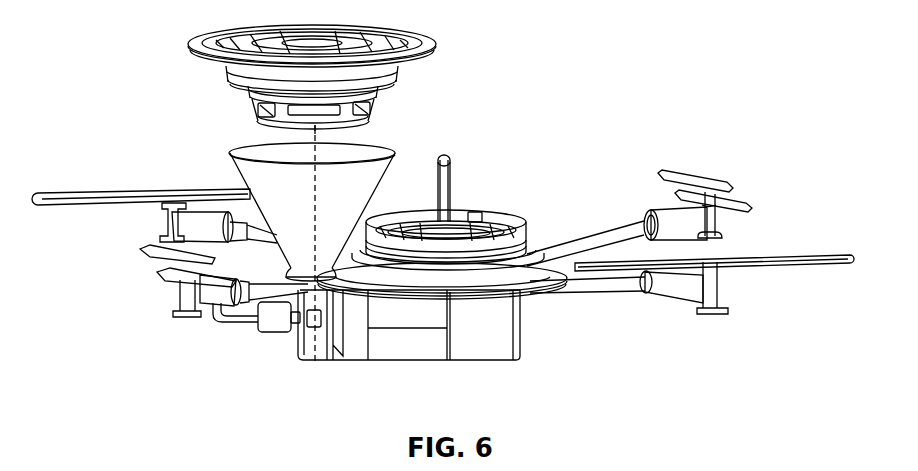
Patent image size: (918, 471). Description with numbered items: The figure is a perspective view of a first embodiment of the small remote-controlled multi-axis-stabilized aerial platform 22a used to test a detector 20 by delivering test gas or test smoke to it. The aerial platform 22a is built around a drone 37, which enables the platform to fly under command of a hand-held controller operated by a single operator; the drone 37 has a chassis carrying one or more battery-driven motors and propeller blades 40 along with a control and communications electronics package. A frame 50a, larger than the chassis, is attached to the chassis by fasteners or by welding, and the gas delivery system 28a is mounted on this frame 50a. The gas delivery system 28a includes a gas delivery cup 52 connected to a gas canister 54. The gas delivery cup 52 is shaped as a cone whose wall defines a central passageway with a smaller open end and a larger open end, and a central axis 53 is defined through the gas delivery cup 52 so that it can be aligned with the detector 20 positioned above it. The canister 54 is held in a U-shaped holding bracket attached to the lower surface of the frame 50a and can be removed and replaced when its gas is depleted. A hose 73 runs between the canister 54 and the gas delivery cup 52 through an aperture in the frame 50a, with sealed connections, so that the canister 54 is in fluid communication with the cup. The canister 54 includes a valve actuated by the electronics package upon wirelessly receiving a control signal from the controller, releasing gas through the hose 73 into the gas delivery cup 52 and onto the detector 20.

The detector 20 is at (440, 47).
The aerial platform 22a is at (602, 138).
The gas delivery system 28a is at (342, 374).
The drone 37 is at (477, 213).
The propeller blades 40 is at (692, 181).
The frame 50a is at (541, 292).
The gas delivery cup 52 is at (387, 170).
The central axis 53 is at (313, 131).
The gas canister 54 is at (481, 363).
The hose 73 is at (305, 299).